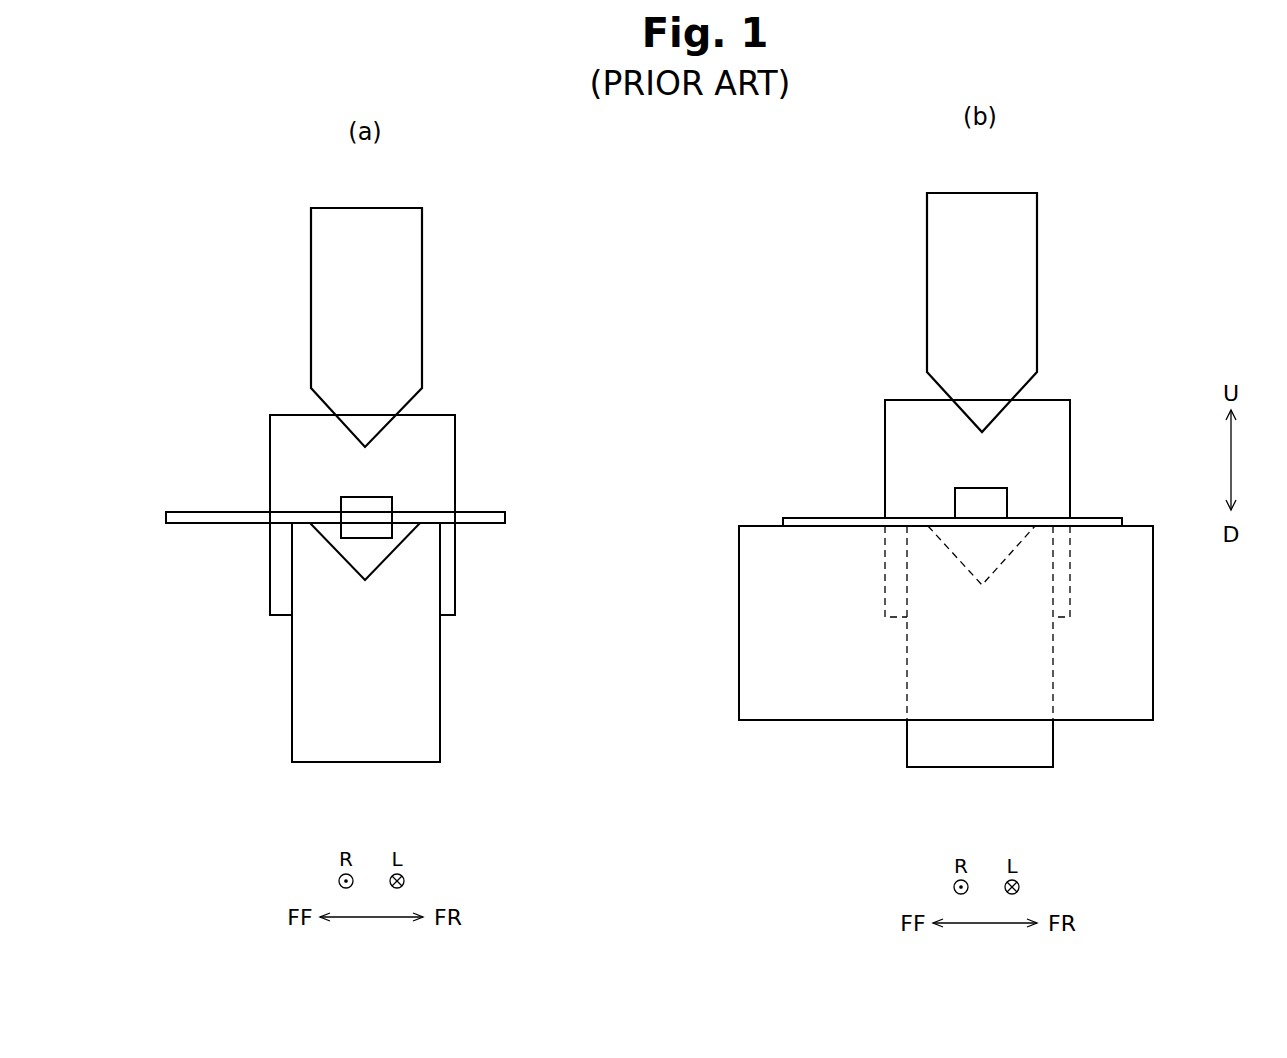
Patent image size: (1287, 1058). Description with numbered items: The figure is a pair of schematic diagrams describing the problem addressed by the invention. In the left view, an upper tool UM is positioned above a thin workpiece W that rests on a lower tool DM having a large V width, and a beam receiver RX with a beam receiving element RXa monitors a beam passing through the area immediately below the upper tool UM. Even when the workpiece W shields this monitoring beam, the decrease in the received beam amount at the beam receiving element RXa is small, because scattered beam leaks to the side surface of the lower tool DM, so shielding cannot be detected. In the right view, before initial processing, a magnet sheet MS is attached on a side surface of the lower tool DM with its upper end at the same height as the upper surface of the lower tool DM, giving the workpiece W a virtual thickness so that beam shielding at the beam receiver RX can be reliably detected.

The upper tool UM is at (422, 297).
The beam receiver RX is at (455, 425).
The beam receiving element RXa is at (392, 503).
The workpiece W is at (220, 512).
The lower tool DM is at (440, 672).
The magnet sheet MS is at (1153, 632).